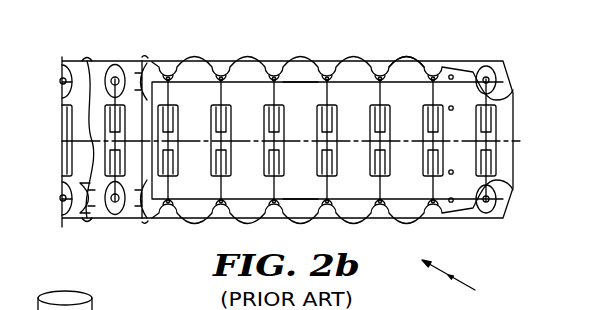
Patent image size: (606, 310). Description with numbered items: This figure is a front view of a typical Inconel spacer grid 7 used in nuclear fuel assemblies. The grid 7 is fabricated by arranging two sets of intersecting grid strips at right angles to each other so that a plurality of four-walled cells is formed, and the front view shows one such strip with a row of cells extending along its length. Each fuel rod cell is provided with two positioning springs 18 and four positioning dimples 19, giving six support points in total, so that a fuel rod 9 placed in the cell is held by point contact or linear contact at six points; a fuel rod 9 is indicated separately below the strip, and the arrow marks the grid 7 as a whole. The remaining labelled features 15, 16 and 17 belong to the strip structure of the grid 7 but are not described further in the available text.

The positioning dimple 19 is at (115, 65).
The positioning spring 18 is at (110, 167).
The inner link plate 15 is at (300, 92).
The wavy outer plate 16 is at (422, 65).
The end link 17 is at (458, 95).
The fuel rod 9 is at (97, 309).
The spacer grid 7 is at (458, 285).